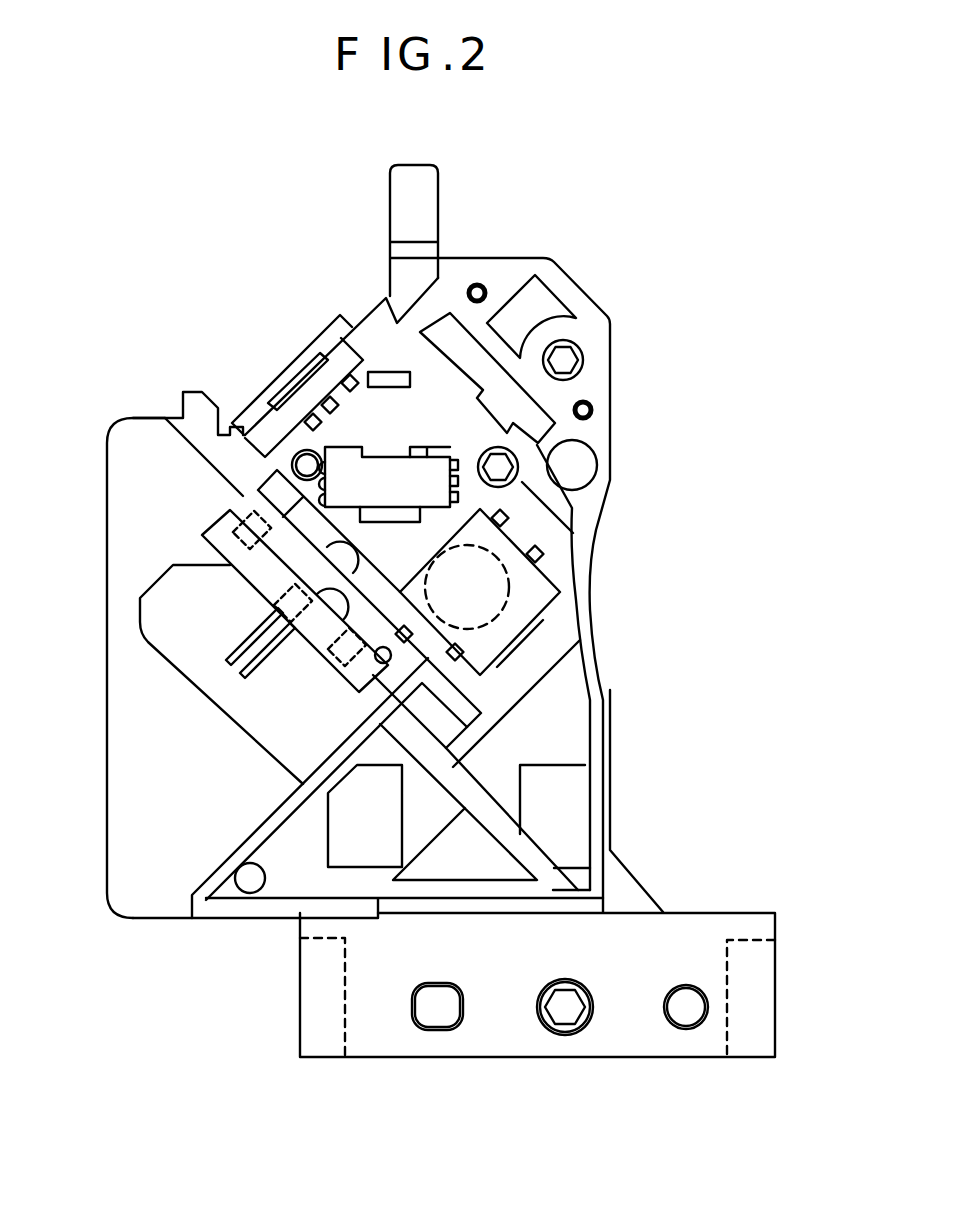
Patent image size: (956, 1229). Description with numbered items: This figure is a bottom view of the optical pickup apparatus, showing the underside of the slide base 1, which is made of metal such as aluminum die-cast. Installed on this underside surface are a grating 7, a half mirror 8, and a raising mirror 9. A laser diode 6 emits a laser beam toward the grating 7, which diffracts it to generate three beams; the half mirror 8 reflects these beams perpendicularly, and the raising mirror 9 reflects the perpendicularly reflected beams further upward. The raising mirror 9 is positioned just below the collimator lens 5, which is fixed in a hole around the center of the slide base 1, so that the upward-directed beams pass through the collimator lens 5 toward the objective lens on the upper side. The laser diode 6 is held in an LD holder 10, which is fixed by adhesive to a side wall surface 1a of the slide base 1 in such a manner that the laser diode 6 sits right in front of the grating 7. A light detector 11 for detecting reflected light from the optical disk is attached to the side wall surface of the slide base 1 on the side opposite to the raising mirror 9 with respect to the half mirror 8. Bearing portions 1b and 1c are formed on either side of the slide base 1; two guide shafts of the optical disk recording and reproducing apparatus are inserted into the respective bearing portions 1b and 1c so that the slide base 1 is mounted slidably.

The slide base 1 is at (398, 588).
The side wall surface 1a is at (248, 462).
The bearing portion 1b is at (312, 1006).
The bearing portion 1c is at (390, 193).
The collimator lens 5 is at (497, 543).
The laser diode 6 is at (287, 582).
The grating 7 is at (335, 535).
The half mirror 8 is at (393, 463).
The raising mirror 9 is at (530, 600).
The LD holder 10 is at (340, 662).
The light detector 11 is at (300, 377).